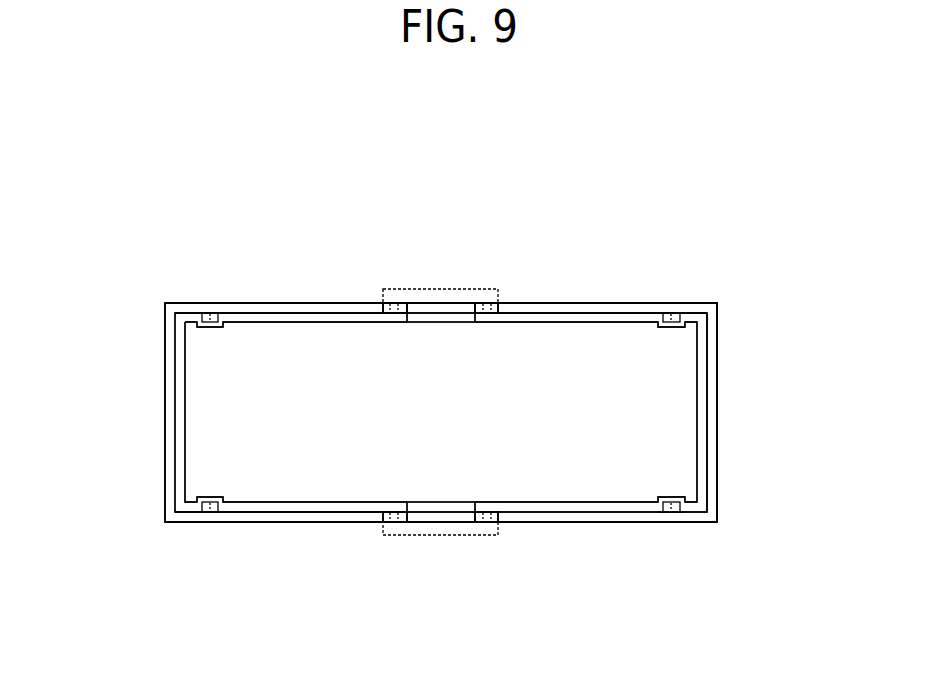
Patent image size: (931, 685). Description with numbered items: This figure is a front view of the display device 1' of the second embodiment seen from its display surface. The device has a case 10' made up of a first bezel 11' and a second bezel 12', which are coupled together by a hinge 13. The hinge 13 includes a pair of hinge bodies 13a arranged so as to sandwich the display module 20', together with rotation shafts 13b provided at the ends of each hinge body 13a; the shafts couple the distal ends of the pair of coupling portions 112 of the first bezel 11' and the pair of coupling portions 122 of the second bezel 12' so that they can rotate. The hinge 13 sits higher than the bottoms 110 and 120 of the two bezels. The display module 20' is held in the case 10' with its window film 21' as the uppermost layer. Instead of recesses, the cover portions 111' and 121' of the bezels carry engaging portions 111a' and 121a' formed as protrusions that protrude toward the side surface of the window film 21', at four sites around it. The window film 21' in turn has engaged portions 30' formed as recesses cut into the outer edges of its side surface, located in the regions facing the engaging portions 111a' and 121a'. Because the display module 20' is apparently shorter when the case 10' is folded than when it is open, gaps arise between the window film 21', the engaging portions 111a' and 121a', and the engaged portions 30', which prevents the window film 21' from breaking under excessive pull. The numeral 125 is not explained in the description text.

The display device 1' is at (457, 365).
The case 10' is at (441, 319).
The first bezel 11' is at (579, 342).
The second bezel 12' is at (303, 341).
The hinge 13 is at (510, 198).
The hinge body 13a is at (445, 297).
The rotation shaft 13b is at (395, 297).
The display module 20' is at (526, 412).
The window film 21' is at (441, 412).
The engaged portion 30' is at (422, 412).
The bottom 110 is at (620, 313).
The cover portion 111' is at (623, 414).
The engaging portion 111a' is at (666, 421).
The coupling portion 112 is at (510, 302).
The bottom 120 is at (268, 313).
The cover portion 121' is at (274, 575).
The engaging portion 121a' is at (192, 420).
The coupling portion 122 is at (381, 301).
The second shell outer plate 125 is at (235, 303).